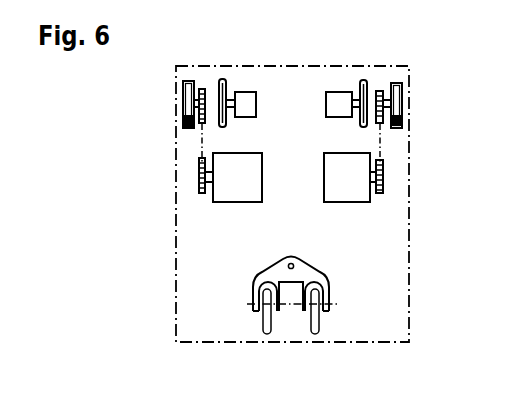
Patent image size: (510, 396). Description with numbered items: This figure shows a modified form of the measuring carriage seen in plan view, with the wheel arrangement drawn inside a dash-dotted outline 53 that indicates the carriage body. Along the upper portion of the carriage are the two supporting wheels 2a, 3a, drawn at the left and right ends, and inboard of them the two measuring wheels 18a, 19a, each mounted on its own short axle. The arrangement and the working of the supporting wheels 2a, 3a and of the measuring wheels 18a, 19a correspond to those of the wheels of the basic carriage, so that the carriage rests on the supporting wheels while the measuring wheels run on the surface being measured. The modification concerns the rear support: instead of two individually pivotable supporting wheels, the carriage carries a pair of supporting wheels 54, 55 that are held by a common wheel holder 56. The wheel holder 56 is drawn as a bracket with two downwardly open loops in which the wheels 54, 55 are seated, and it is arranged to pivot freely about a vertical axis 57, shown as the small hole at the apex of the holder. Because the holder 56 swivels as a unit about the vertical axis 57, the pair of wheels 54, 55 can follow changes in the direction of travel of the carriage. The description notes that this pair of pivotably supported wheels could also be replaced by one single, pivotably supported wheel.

The supporting wheel 2a is at (186, 118).
The supporting wheel 3a is at (403, 115).
The measuring wheel 18a is at (222, 79).
The measuring wheel 19a is at (363, 80).
The housing 53 is at (182, 214).
The supporting wheel 54 is at (267, 332).
The supporting wheel 55 is at (315, 332).
The wheel holder 56 is at (310, 268).
The vertical axis 57 is at (288, 264).